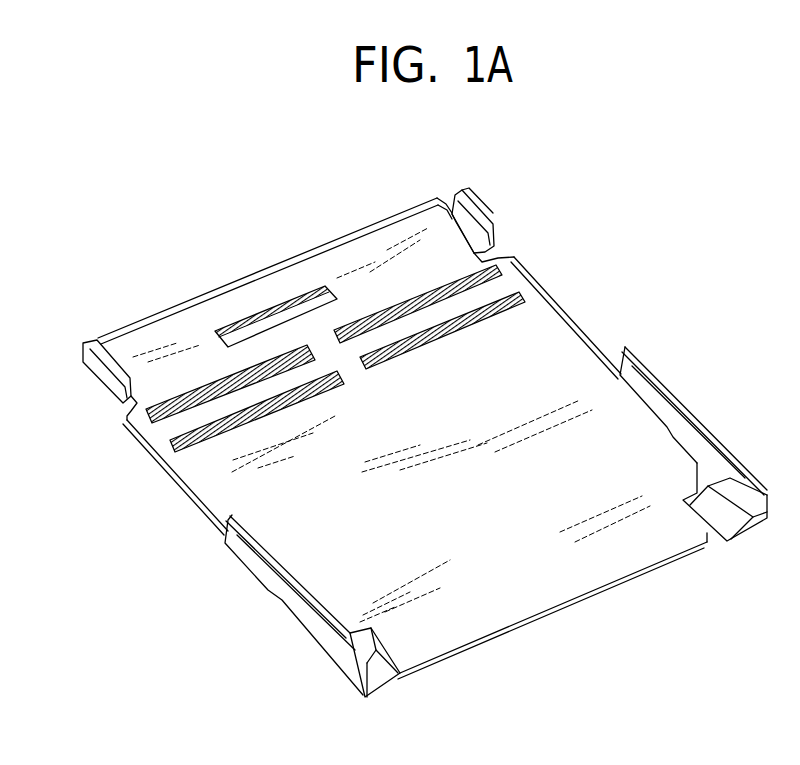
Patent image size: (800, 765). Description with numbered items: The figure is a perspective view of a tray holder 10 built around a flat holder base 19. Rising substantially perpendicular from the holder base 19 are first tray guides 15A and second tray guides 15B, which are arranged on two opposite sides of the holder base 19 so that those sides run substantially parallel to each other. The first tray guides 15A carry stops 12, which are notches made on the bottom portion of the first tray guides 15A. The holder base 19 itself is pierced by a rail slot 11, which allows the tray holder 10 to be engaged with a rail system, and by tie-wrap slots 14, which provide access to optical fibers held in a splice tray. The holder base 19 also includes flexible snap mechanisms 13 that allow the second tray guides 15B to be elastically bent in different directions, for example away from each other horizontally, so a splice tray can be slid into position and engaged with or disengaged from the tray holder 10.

The tray holder 10 is at (614, 622).
The rail slot 11 is at (280, 317).
The stops 12 is at (493, 231).
The flexible snap mechanisms 13 is at (697, 460).
The tie-wrap slots 14 is at (237, 413).
The first tray guides 15A is at (478, 197).
The second tray guides 15B is at (267, 587).
The holder base 19 is at (540, 352).